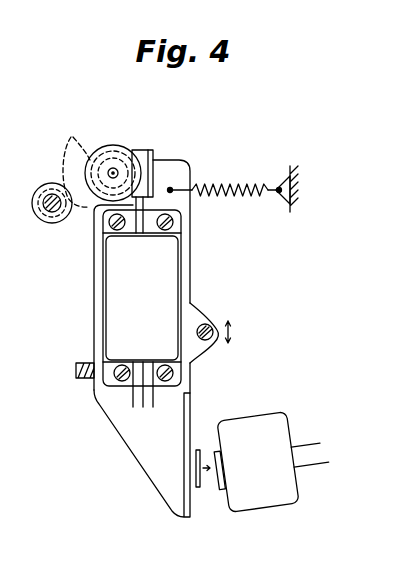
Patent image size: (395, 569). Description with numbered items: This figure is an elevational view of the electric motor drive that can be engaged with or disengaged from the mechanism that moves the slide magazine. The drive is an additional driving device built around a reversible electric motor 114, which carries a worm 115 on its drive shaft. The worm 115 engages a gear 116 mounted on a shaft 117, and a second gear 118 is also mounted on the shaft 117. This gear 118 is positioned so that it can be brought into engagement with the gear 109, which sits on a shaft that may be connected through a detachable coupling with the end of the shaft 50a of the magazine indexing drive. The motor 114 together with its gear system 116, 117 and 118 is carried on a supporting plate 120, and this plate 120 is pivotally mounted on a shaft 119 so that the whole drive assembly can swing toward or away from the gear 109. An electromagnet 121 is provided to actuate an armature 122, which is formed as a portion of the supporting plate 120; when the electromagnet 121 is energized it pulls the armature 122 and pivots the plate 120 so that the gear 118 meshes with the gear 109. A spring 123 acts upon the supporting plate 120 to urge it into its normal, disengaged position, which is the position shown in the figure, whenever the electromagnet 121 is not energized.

The shaft 50a is at (53, 215).
The gear 109 is at (39, 184).
The reversible electric motor 114 is at (124, 288).
The worm 115 is at (146, 152).
The gear 116 is at (104, 146).
The shaft 117 is at (114, 169).
The gear 118 is at (68, 164).
The shaft 119 is at (215, 322).
The plate 120 is at (134, 418).
The electromagnet 121 is at (250, 432).
The armature 122 is at (203, 486).
The spring 123 is at (236, 194).